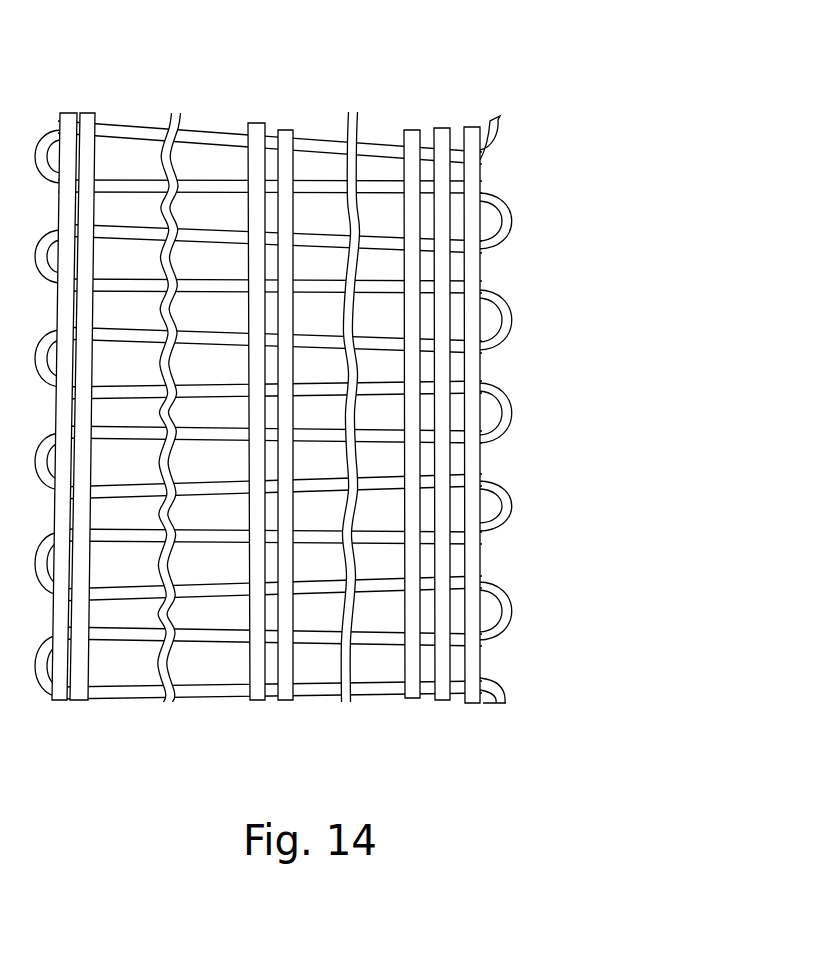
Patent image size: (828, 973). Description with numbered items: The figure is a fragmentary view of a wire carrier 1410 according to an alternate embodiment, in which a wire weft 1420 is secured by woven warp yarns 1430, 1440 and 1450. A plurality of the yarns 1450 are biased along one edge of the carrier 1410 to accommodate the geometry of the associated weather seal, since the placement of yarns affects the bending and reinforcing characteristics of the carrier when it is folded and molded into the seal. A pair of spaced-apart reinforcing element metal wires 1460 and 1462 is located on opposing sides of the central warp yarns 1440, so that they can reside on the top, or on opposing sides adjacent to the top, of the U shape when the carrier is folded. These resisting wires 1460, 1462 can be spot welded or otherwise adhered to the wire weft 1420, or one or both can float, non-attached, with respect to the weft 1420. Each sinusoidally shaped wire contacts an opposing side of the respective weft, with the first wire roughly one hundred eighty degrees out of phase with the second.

The wire carrier 1410 is at (323, 80).
The wire weft 1420 is at (130, 120).
The woven warp yarns 1430 is at (57, 700).
The central warp yarns 1440 is at (253, 700).
The warp yarns 1450 is at (410, 700).
The reinforcing element wire 1460 is at (162, 700).
The reinforcing element wire 1462 is at (343, 700).